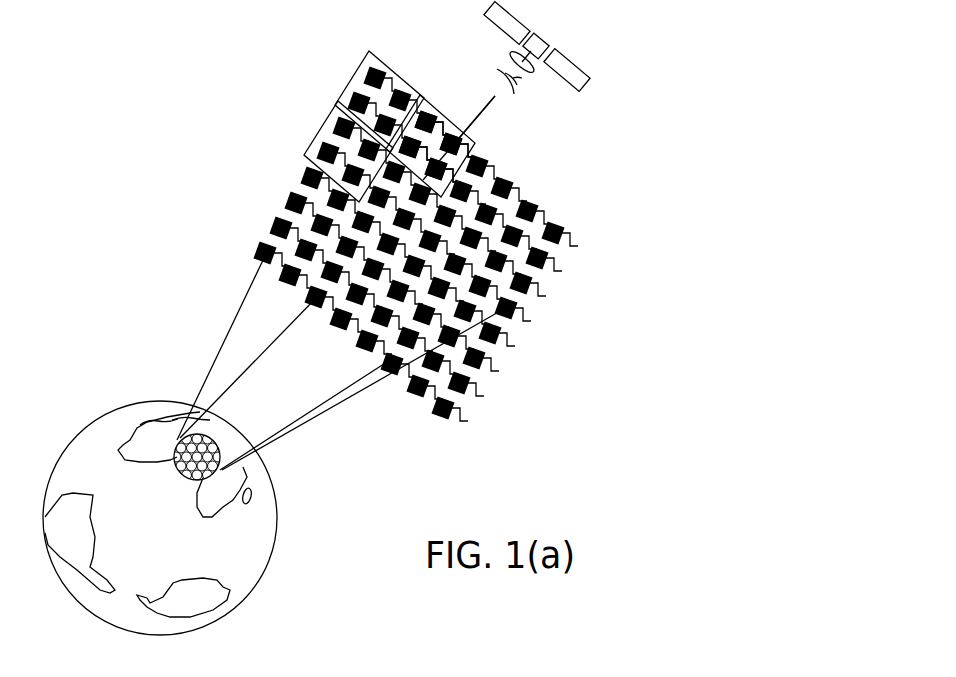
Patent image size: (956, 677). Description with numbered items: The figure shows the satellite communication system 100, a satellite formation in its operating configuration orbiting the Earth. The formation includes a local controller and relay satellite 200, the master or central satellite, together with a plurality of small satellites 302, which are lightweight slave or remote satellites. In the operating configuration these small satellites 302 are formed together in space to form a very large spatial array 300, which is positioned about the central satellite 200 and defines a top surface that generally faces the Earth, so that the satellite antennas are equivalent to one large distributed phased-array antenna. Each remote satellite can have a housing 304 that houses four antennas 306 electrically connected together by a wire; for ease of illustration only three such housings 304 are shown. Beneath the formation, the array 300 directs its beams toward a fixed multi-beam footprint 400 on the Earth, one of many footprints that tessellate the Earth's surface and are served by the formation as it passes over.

The satellite communication system 100 is at (143, 92).
The local controller and relay satellite 200 is at (563, 83).
The array 300 is at (502, 355).
The small satellites 302 is at (389, 62).
The housing 304 is at (328, 132).
The antennas 306 is at (398, 101).
The multi-beam footprint 400 is at (178, 440).